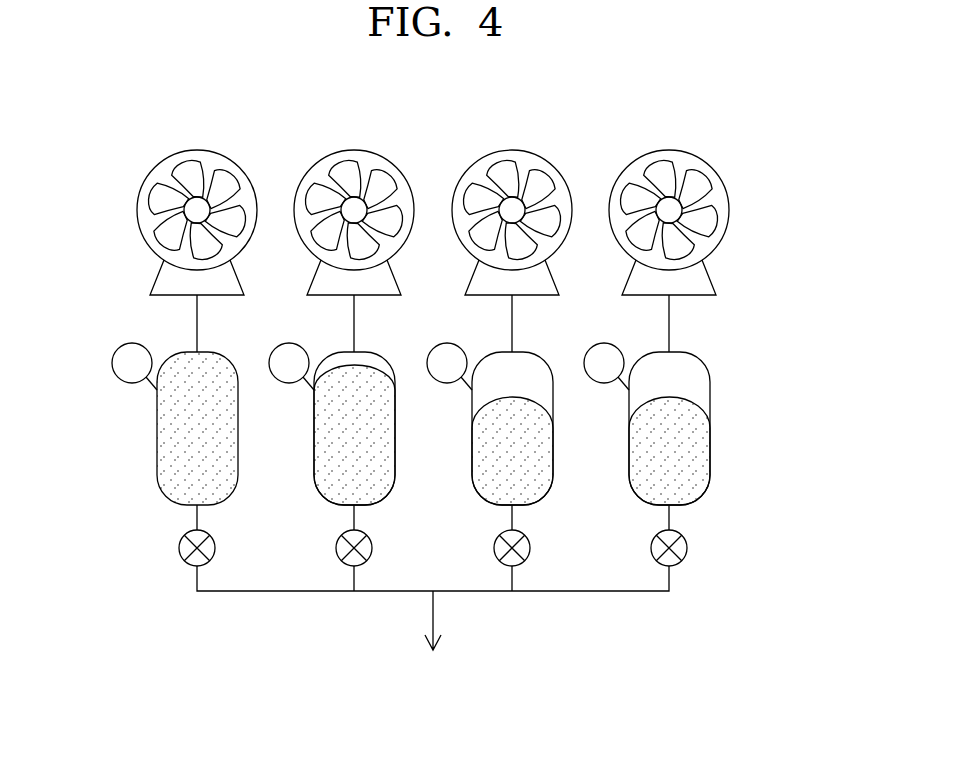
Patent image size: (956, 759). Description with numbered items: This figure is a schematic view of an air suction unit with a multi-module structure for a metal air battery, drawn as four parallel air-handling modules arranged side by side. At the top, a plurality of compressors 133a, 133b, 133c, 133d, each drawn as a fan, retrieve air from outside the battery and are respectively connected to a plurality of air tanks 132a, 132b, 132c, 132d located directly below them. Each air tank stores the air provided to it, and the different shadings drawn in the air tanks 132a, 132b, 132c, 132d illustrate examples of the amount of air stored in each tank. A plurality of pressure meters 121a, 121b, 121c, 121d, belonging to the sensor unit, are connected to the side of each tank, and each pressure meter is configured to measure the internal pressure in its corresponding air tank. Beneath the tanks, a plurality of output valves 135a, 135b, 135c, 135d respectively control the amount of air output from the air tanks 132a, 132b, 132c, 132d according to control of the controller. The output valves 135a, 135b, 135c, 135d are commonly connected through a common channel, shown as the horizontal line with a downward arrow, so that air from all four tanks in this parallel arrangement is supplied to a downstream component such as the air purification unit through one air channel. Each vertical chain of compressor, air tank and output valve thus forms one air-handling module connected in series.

The compressor 133a is at (197, 150).
The compressor 133b is at (354, 150).
The compressor 133c is at (512, 150).
The compressor 133d is at (669, 150).
The pressure meter 121a is at (120, 346).
The pressure meter 121b is at (277, 346).
The pressure meter 121c is at (435, 346).
The pressure meter 121d is at (592, 346).
The air tank 132a is at (157, 477).
The air tank 132b is at (314, 477).
The air tank 132c is at (553, 477).
The air tank 132d is at (710, 477).
The output valve 135a is at (187, 563).
The output valve 135b is at (344, 563).
The output valve 135c is at (521, 563).
The output valve 135d is at (678, 563).